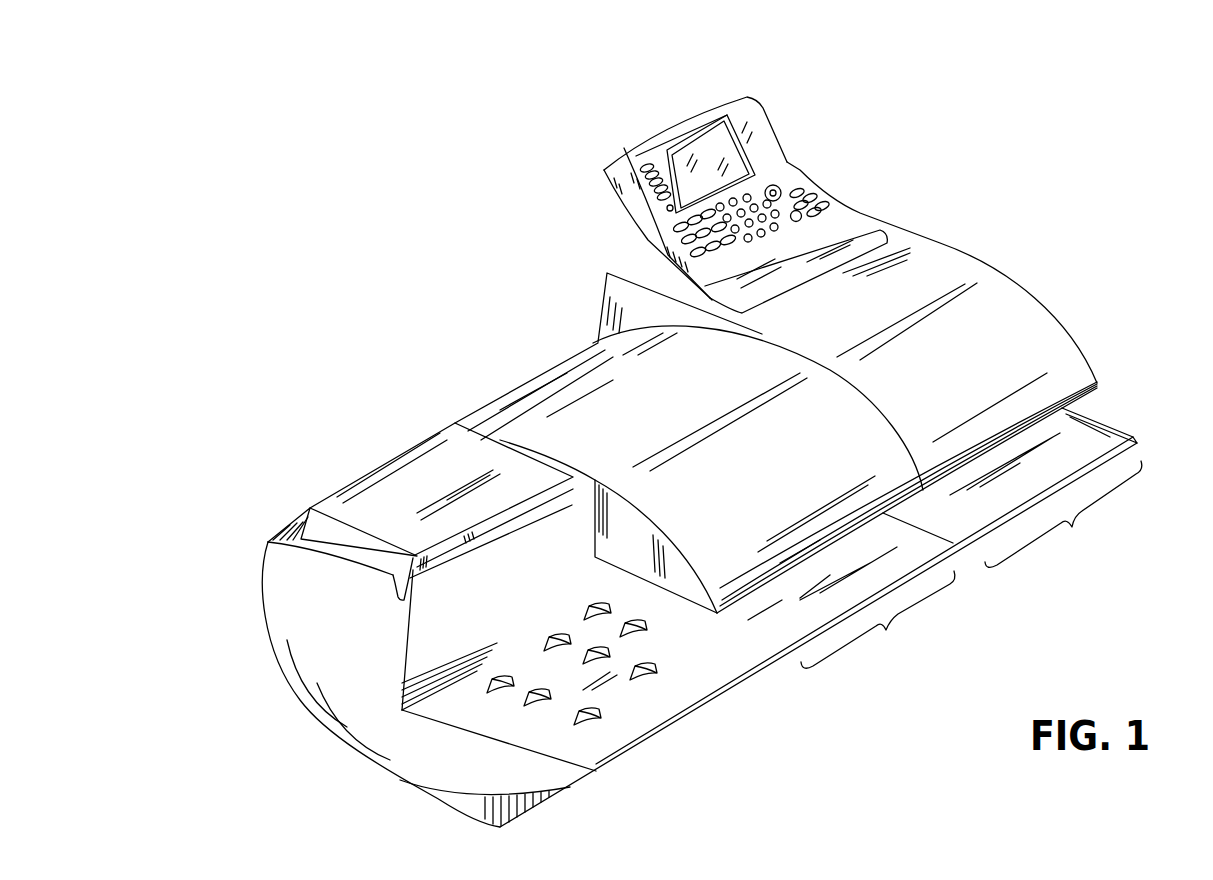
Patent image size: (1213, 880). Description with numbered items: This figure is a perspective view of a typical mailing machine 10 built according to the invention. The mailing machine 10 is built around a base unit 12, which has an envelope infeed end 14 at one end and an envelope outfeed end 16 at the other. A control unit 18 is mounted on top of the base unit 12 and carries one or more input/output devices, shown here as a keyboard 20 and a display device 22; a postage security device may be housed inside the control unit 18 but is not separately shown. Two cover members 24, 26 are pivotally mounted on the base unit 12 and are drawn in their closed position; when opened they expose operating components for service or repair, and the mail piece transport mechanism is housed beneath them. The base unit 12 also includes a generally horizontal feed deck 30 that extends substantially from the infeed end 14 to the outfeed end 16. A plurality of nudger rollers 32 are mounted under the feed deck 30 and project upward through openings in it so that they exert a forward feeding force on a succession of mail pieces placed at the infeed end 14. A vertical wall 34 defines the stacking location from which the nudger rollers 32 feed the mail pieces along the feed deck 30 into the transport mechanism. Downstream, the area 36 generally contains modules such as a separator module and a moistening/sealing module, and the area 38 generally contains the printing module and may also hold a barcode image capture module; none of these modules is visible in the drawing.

The mailing machine 10 is at (350, 390).
The base unit 12 is at (337, 735).
The envelope infeed end 14 is at (343, 793).
The envelope outfeed end 16 is at (1120, 386).
The control unit 18 is at (781, 146).
The keyboard 20 is at (648, 258).
The display device 22 is at (682, 143).
The cover member 24 is at (1022, 308).
The cover member 26 is at (617, 400).
The feed deck 30 is at (707, 655).
The nudger rollers 32 is at (556, 616).
The vertical wall 34 is at (427, 633).
The module area 36 is at (878, 619).
The printing module area 38 is at (1012, 487).